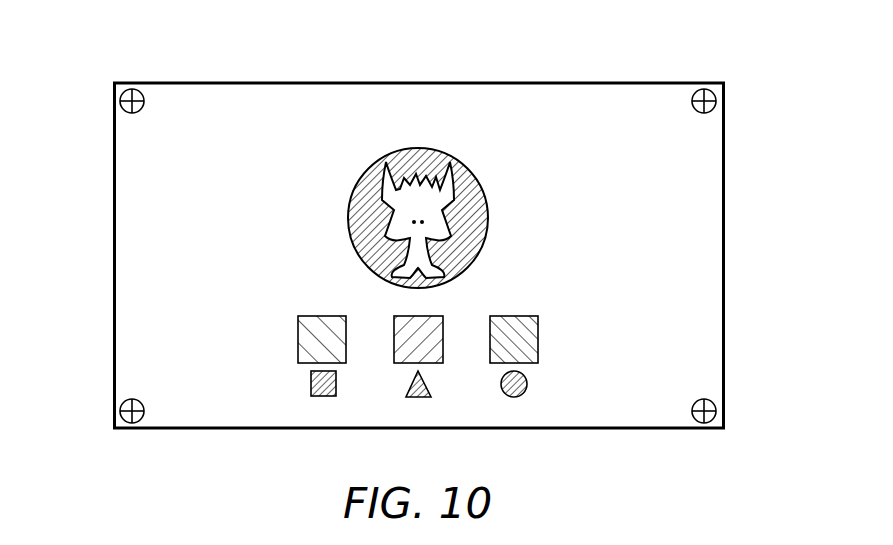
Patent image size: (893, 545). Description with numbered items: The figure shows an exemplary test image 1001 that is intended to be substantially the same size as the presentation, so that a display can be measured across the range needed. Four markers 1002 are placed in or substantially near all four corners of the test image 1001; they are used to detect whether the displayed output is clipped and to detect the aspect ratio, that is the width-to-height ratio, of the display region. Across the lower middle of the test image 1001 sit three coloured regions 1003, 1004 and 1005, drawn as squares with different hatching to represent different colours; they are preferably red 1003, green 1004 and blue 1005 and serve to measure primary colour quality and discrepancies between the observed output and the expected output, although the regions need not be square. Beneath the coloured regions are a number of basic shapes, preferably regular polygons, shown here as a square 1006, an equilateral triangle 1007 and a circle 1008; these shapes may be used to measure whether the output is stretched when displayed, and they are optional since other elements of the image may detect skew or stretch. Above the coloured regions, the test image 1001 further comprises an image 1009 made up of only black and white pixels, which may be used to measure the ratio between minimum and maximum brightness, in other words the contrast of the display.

The test image 1001 is at (569, 96).
The markers 1002 is at (120, 101).
The coloured region 1003 is at (298, 339).
The coloured region 1004 is at (394, 322).
The coloured region 1005 is at (539, 338).
The square 1006 is at (323, 397).
The equilateral triangle 1007 is at (418, 397).
The circle 1008 is at (514, 397).
The image with only black and white pixels 1009 is at (487, 215).